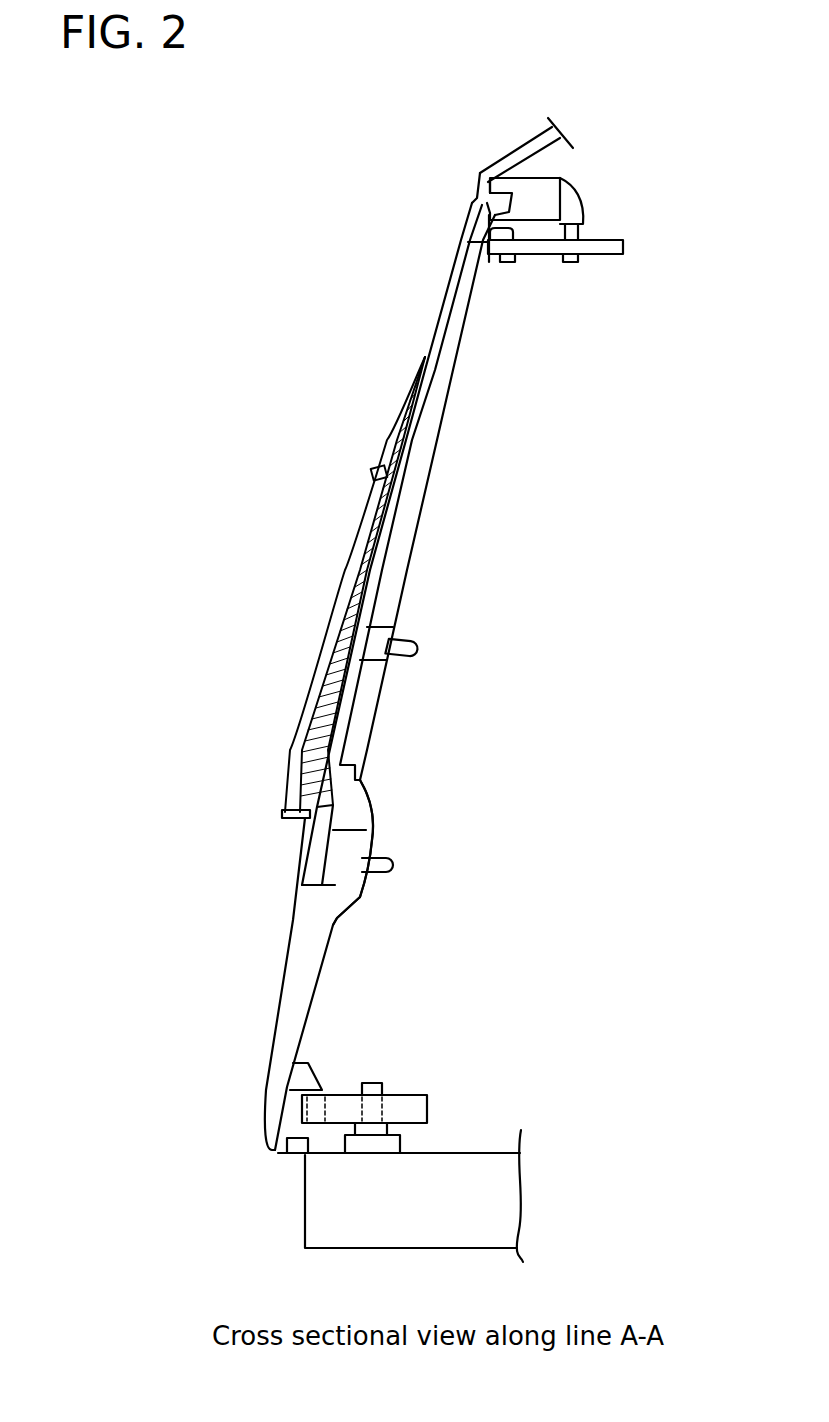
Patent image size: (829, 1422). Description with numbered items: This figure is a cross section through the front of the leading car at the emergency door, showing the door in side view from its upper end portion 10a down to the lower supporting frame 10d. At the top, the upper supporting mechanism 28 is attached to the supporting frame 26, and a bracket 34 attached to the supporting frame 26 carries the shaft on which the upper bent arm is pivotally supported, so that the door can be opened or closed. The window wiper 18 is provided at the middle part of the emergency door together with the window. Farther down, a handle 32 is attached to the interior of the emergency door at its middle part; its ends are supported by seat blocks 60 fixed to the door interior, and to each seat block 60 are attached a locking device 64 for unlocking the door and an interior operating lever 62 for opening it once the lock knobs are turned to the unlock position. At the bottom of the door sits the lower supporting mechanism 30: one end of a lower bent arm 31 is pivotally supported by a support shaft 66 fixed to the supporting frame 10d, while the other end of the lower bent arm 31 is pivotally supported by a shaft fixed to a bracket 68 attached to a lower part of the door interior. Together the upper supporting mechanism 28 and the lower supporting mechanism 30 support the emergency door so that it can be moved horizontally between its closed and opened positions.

The upper end portion of door panel 10a is at (513, 157).
The supporting frame 10d is at (490, 1153).
The window wiper 18 is at (398, 403).
The supporting frame 26 is at (540, 178).
The upper supporting mechanism 28 is at (640, 230).
The lower supporting mechanism 30 is at (435, 1103).
The lower bent arm 31 is at (400, 1093).
The handle 32 is at (417, 648).
The bracket 34 is at (580, 195).
The seat block 60 is at (365, 800).
The interior operating lever 62 is at (392, 865).
The locking device 64 is at (337, 867).
The support shaft 66 is at (402, 1140).
The bracket 68 is at (305, 1065).